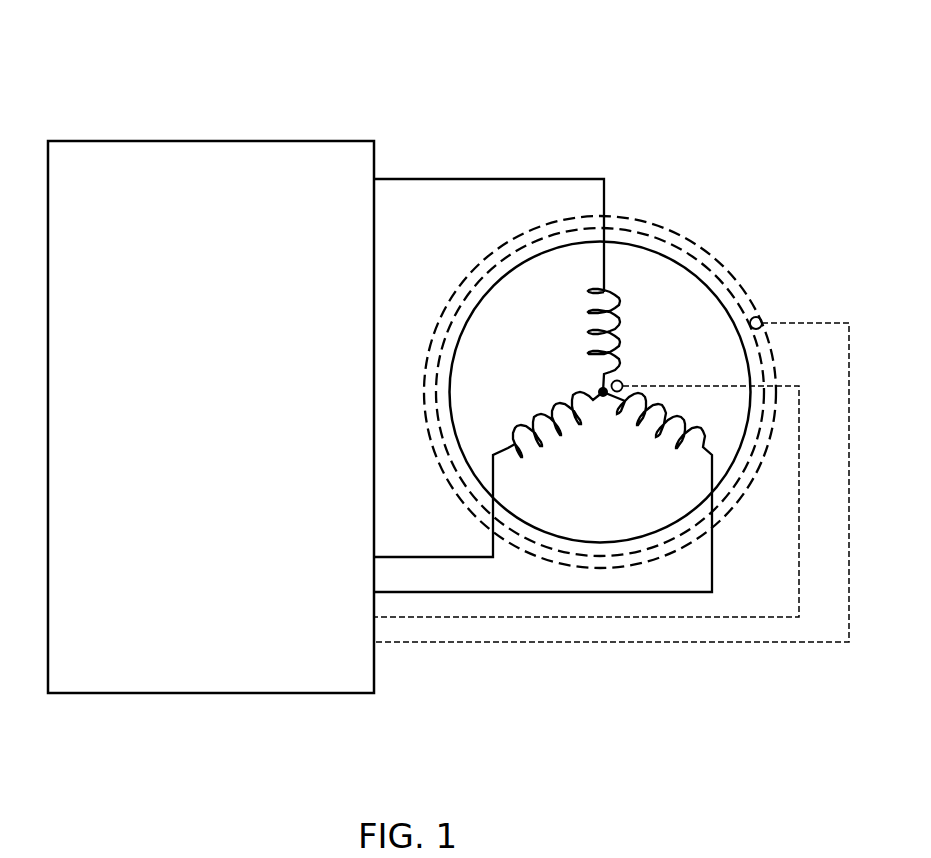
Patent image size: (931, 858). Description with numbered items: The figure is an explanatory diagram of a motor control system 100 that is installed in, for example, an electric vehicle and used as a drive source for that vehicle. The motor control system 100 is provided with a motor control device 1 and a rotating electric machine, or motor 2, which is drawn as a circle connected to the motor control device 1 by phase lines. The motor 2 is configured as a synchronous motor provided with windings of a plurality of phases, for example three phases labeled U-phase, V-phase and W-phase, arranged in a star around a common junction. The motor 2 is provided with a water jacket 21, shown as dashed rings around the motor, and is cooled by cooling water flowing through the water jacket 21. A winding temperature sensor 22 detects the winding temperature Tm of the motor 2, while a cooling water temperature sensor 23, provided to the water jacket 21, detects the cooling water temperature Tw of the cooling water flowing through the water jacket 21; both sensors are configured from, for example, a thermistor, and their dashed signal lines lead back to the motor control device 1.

The motor control system 100 is at (632, 122).
The motor control device 1 is at (323, 140).
The rotating electric machine (motor) 2 is at (690, 267).
The water jacket 21 is at (737, 283).
The winding temperature sensor 22 is at (623, 382).
The cooling water temperature sensor 23 is at (762, 321).